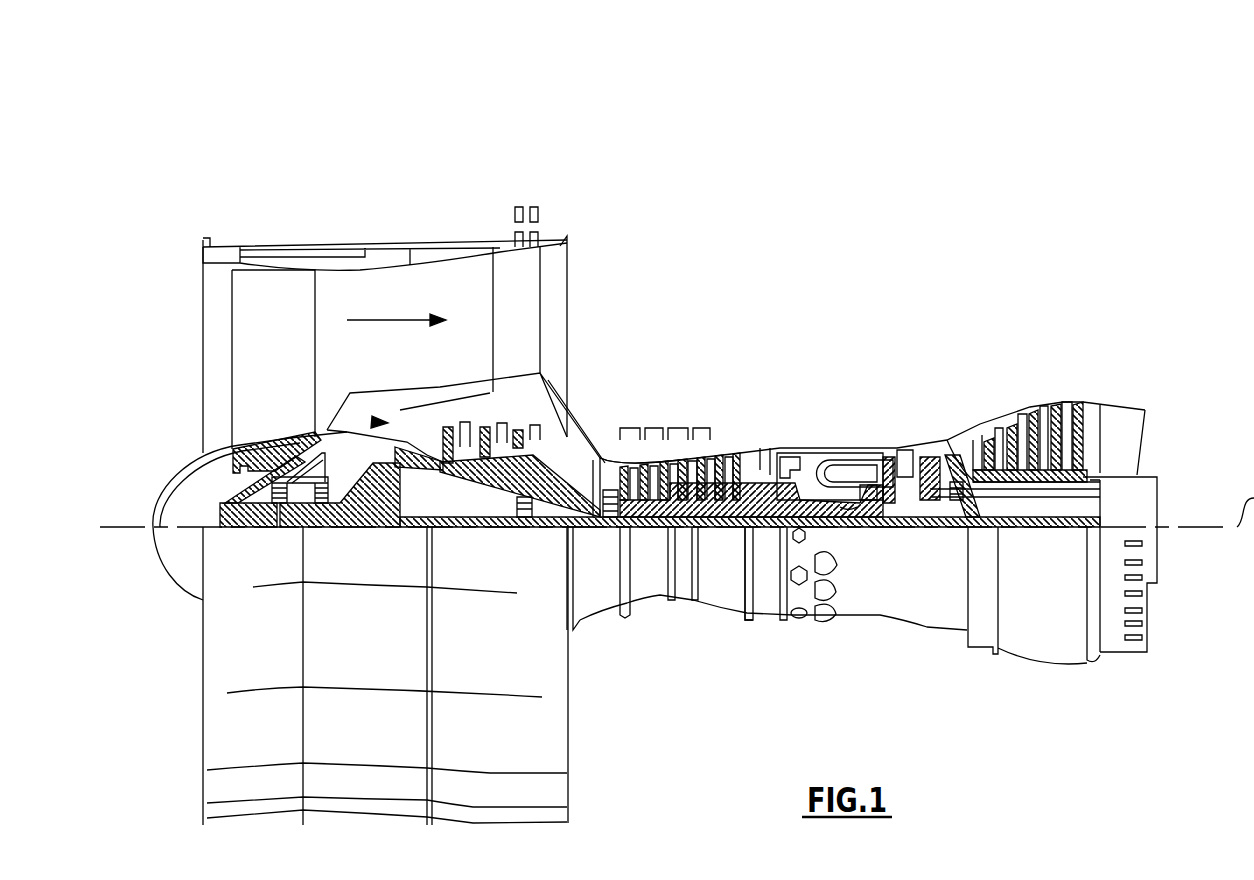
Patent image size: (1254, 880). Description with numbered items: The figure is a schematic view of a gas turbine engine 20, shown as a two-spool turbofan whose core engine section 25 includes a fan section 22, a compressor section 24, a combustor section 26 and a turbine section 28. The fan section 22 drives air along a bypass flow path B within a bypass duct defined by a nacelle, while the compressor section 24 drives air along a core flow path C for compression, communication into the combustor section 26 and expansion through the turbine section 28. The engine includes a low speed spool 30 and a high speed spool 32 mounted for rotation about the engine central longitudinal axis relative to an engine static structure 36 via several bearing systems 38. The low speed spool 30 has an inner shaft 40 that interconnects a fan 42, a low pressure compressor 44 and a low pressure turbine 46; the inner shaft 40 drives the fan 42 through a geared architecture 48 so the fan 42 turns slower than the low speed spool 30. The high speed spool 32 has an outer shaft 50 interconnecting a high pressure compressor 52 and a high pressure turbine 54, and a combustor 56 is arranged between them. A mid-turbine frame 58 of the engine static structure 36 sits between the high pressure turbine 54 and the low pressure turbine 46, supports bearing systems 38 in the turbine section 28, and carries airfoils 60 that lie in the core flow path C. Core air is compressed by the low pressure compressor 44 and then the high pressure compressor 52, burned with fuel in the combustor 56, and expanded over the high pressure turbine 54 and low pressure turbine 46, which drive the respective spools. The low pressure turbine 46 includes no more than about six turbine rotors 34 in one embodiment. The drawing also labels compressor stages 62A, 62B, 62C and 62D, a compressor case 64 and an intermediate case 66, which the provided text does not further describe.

The gas turbine engine 20 is at (790, 143).
The fan section 22 is at (412, 223).
The compressor section 24 is at (425, 351).
The core engine section 25 is at (850, 292).
The combustor section 26 is at (795, 351).
The turbine section 28 is at (1103, 351).
The low speed spool 30 is at (723, 545).
The high speed spool 32 is at (773, 447).
The turbine rotors 34 is at (1042, 495).
The engine static structure 36 is at (763, 628).
The bearing systems 38 is at (280, 527).
The inner shaft 40 is at (586, 533).
The fan 42 is at (287, 374).
The low pressure compressor 44 is at (497, 385).
The low pressure turbine 46 is at (1030, 427).
The geared architecture 48 is at (391, 527).
The outer shaft 50 is at (855, 532).
The high pressure compressor 52 is at (685, 530).
The high pressure turbine 54 is at (910, 450).
The combustor 56 is at (840, 470).
The mid-turbine frame 58 is at (948, 436).
The airfoils 60 is at (980, 527).
The compressor stage 62A is at (627, 428).
The compressor stage 62B is at (653, 428).
The compressor stage 62C is at (677, 428).
The compressor stage 62D is at (697, 428).
The compressor case 64 is at (620, 460).
The intermediate case 66 is at (607, 478).
The bypass flow path B is at (380, 318).
The core flow path C is at (368, 421).